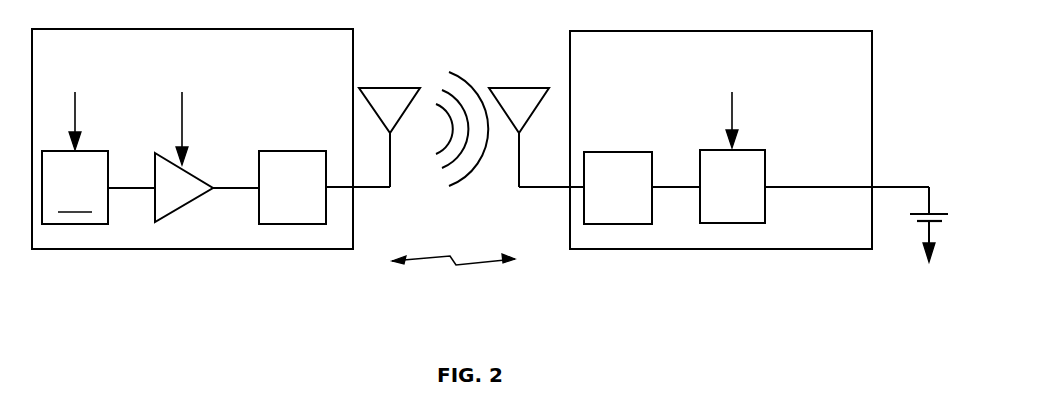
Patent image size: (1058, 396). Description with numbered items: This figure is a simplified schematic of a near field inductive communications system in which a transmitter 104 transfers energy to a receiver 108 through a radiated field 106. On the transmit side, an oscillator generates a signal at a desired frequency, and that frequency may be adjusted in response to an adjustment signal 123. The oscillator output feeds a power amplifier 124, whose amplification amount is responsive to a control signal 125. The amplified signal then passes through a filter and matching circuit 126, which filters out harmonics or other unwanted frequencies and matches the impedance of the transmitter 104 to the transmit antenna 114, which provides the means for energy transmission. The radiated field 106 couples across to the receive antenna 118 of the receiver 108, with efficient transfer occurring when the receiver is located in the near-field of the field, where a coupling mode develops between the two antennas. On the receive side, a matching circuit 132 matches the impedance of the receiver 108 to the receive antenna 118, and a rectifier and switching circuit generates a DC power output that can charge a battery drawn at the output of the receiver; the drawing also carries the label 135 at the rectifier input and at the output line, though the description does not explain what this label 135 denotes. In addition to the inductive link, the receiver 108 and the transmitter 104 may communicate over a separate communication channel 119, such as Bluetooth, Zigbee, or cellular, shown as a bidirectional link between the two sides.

The transmitter 104 is at (173, 63).
The radiated field 106 is at (463, 188).
The receiver 108 is at (704, 63).
The transmit antenna 114 is at (368, 88).
The receive antenna 118 is at (533, 88).
The communication channel 119 is at (460, 282).
The adjustment signal 123 is at (75, 104).
The power amplifier 124 is at (158, 198).
The control signal 125 is at (182, 104).
The filter and matching circuit 126 is at (276, 198).
The matching circuit 132 is at (601, 198).
The rectifier output / control 135 is at (732, 104).